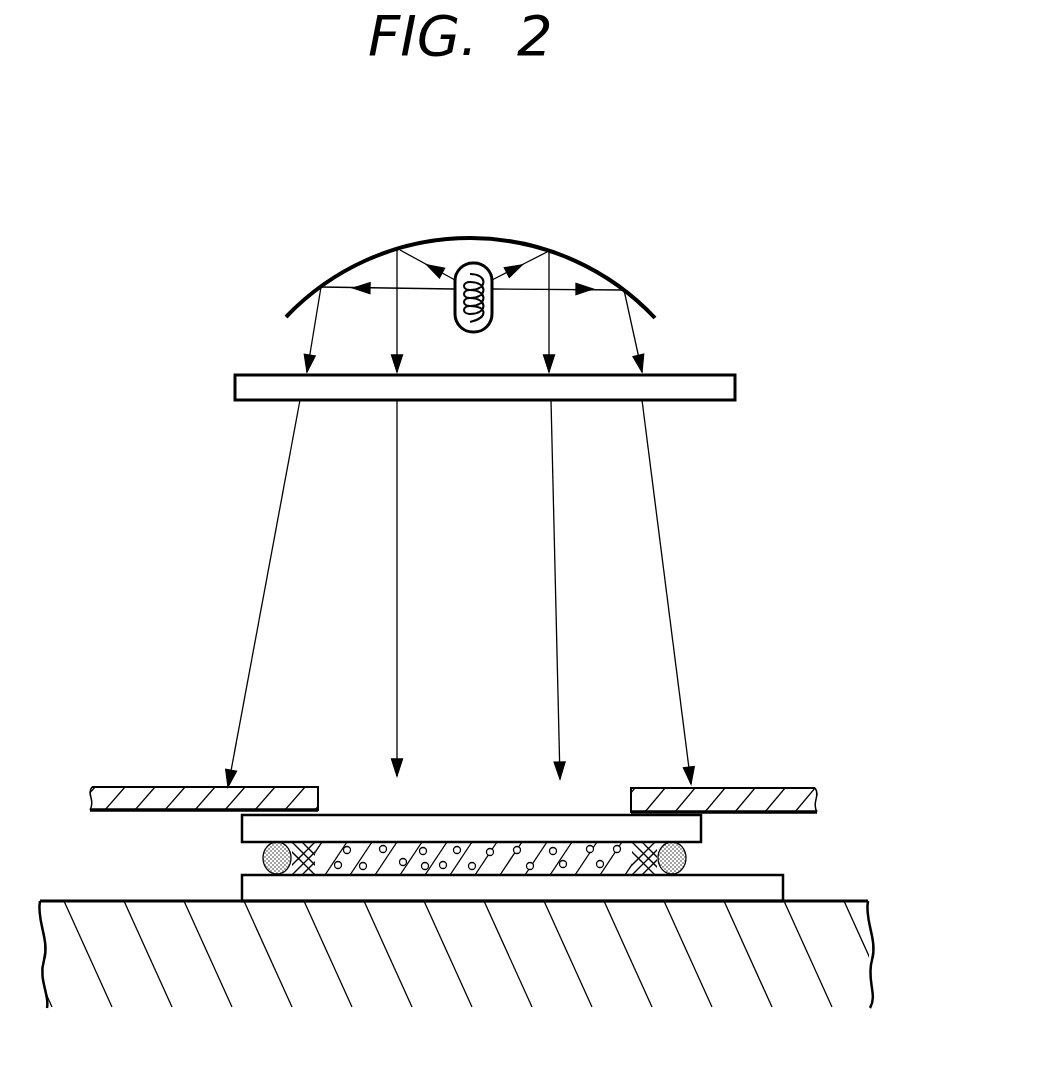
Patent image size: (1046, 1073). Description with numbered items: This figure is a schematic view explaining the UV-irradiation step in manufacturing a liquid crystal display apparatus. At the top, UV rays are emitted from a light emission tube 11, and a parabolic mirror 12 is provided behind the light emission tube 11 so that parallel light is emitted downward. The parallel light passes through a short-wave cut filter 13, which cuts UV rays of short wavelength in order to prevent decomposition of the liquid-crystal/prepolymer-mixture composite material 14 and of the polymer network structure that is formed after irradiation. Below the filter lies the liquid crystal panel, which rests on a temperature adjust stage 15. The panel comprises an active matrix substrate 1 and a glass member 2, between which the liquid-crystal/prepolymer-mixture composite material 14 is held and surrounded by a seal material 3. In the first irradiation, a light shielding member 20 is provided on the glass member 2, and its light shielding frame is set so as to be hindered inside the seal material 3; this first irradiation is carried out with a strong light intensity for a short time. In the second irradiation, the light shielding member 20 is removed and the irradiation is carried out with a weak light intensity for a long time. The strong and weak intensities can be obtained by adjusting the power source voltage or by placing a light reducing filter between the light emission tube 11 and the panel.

The active matrix substrate 1 is at (783, 889).
The glass member 2 is at (242, 828).
The seal material 3 is at (263, 856).
The light emission tube 11 is at (479, 263).
The parabolic mirror 12 is at (605, 272).
The short-wave cut filter 13 is at (698, 382).
The liquid-crystal/prepolymer-mixture composite material 14 is at (472, 842).
The temperature adjust stage 15 is at (55, 903).
The light shielding member 20 is at (150, 790).